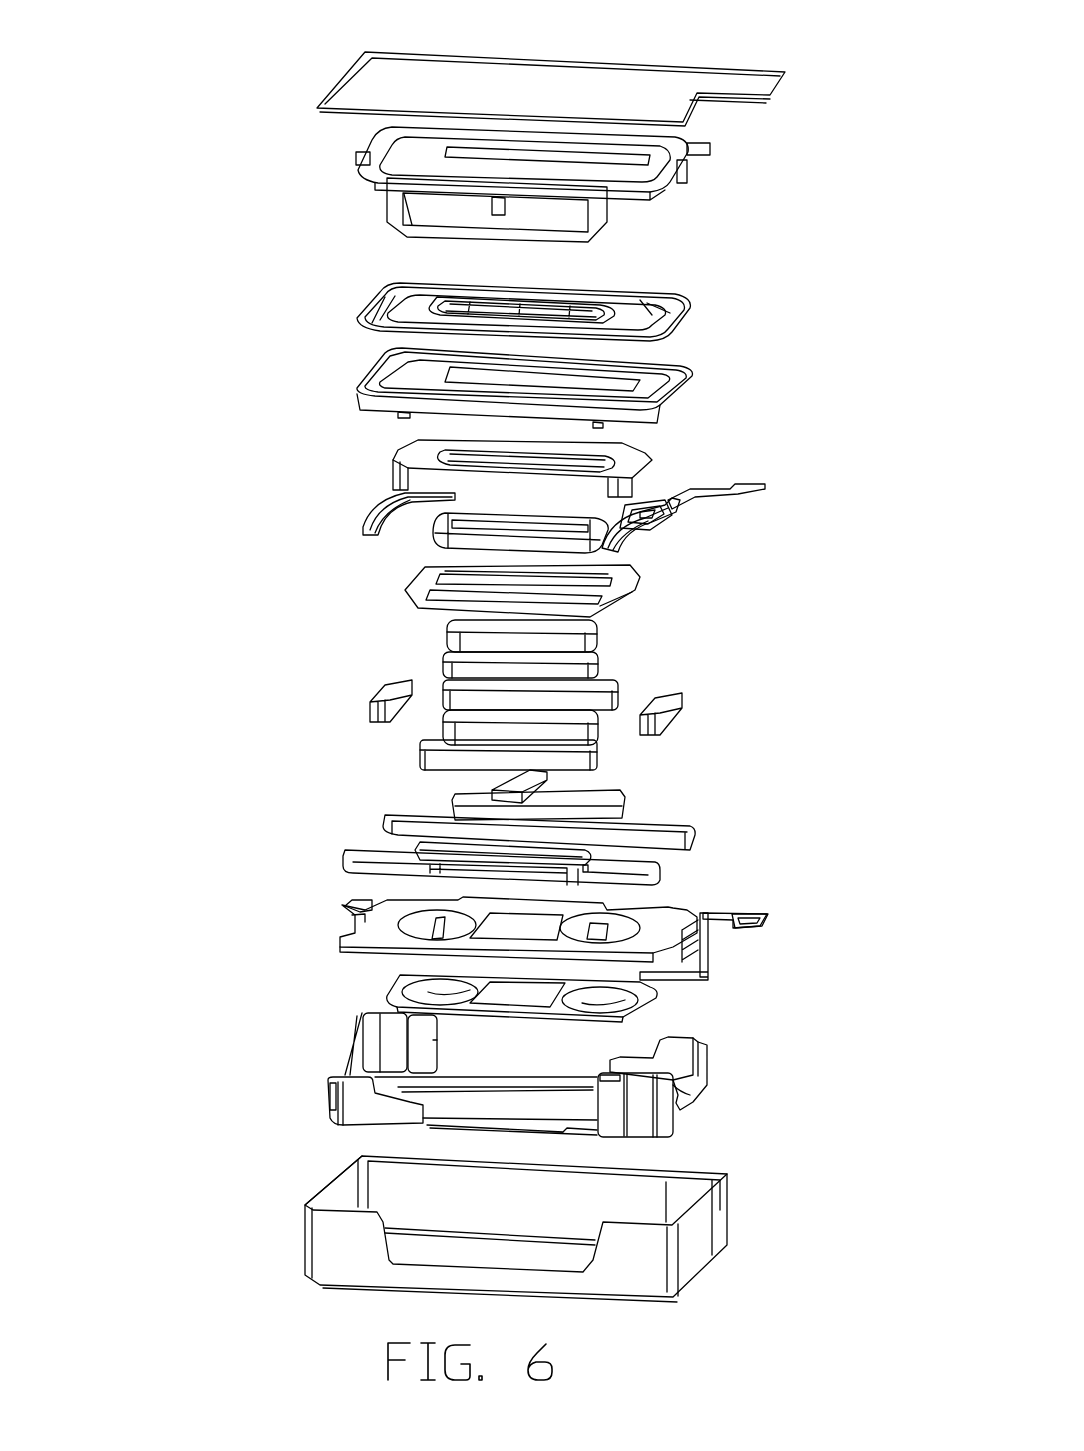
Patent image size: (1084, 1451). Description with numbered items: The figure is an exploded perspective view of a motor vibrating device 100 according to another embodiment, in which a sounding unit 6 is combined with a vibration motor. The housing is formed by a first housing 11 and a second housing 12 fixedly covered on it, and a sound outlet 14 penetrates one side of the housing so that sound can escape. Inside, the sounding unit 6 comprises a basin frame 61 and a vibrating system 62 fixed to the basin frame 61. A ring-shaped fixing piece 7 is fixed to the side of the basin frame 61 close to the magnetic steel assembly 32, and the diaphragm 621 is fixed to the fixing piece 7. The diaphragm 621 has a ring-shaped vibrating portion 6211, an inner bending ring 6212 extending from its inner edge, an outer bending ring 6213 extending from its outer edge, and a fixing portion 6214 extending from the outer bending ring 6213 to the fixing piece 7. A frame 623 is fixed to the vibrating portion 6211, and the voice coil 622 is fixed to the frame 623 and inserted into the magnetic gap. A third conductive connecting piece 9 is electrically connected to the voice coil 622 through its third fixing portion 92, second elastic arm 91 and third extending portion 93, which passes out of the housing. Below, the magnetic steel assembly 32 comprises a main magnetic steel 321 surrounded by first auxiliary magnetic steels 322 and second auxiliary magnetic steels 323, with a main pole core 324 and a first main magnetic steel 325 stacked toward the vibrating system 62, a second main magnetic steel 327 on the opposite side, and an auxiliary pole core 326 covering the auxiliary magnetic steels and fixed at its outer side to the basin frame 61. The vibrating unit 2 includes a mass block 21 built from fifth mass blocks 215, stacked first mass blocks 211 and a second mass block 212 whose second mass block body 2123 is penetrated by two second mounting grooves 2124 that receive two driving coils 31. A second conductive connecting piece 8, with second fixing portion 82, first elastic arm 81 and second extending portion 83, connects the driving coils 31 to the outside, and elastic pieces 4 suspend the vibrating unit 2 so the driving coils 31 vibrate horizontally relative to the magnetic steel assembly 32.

The motor vibrating device 100 is at (546, 36).
The second housing 12 is at (765, 81).
The basin frame 61 is at (712, 142).
The sound outlet 14 is at (428, 217).
The sounding unit 6 is at (822, 253).
The vibrating system 62 is at (857, 300).
The diaphragm 621 is at (782, 222).
The inner bending ring 6212 is at (592, 300).
The vibrating portion 6211 is at (643, 300).
The outer bending ring 6213 is at (663, 294).
The fixing portion 6214 is at (667, 333).
The fixing piece 7 is at (362, 387).
The frame 623 is at (640, 457).
The voice coil 622 is at (630, 512).
The third conductive connecting piece 9 is at (863, 475).
The third extending portion 93 is at (737, 485).
The third fixing portion 92 is at (655, 512).
The second elastic arm 91 is at (607, 540).
The vibrating unit 2 is at (112, 665).
The driving coil 31 is at (640, 912).
The mass block 21 is at (122, 805).
The magnetic steel assembly 32 is at (863, 593).
The auxiliary pole core 326 is at (640, 584).
The first main magnetic steel 325 is at (597, 641).
The main pole core 324 is at (597, 668).
The first auxiliary magnetic steel 322 is at (618, 694).
The second auxiliary magnetic steel 323 is at (682, 713).
The main magnetic steel 321 is at (598, 738).
The second main magnetic steel 327 is at (548, 797).
The fifth mass block 215 is at (385, 827).
The first mass block 211 is at (345, 860).
The second mass block 212 is at (197, 890).
The second mass block body 2123 is at (360, 918).
The second mounting groove 2124 is at (393, 950).
The second conductive connecting piece 8 is at (848, 955).
The second extending portion 83 is at (747, 928).
The first elastic arm 81 is at (703, 975).
The second fixing portion 82 is at (608, 1001).
The elastic piece 4 is at (677, 1110).
The first housing 11 is at (307, 1227).